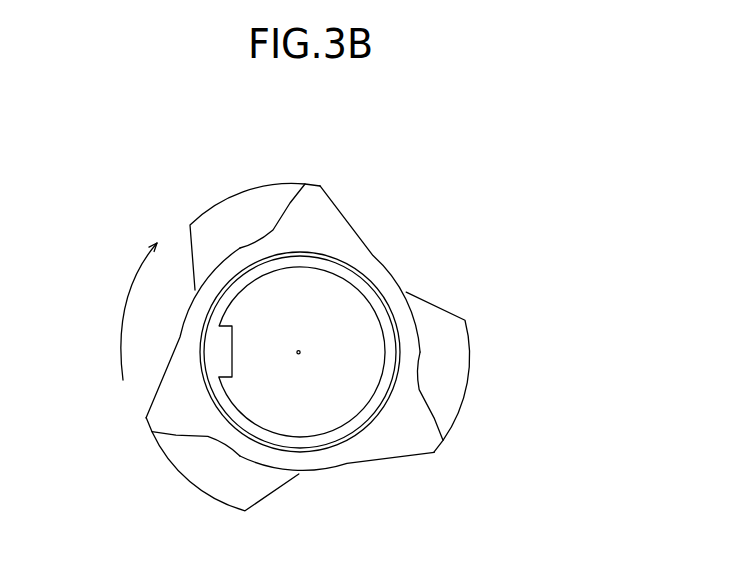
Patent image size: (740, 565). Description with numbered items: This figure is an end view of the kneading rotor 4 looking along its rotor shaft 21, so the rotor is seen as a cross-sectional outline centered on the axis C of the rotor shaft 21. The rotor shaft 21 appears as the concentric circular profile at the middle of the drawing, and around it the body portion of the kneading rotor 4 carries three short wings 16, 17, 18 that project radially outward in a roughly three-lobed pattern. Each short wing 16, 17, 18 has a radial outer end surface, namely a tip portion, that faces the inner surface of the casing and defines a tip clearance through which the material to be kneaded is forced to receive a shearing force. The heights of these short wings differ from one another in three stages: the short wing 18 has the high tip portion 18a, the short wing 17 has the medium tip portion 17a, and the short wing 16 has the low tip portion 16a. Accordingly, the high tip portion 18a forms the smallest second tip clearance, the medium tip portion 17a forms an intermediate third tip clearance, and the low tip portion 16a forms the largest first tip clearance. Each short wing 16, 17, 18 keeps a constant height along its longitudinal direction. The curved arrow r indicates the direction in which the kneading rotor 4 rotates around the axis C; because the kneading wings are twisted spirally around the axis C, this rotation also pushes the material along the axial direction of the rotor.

The kneading rotor 4 is at (601, 107).
The short wing 16 is at (165, 455).
The low tip portion 16a is at (146, 419).
The short wing 17 is at (466, 391).
The medium tip portion 17a is at (438, 445).
The short wing 18 is at (350, 213).
The high tip portion 18a is at (313, 184).
The rotor shaft 21 is at (362, 428).
The axis C is at (300, 352).
The rotation direction r is at (126, 311).